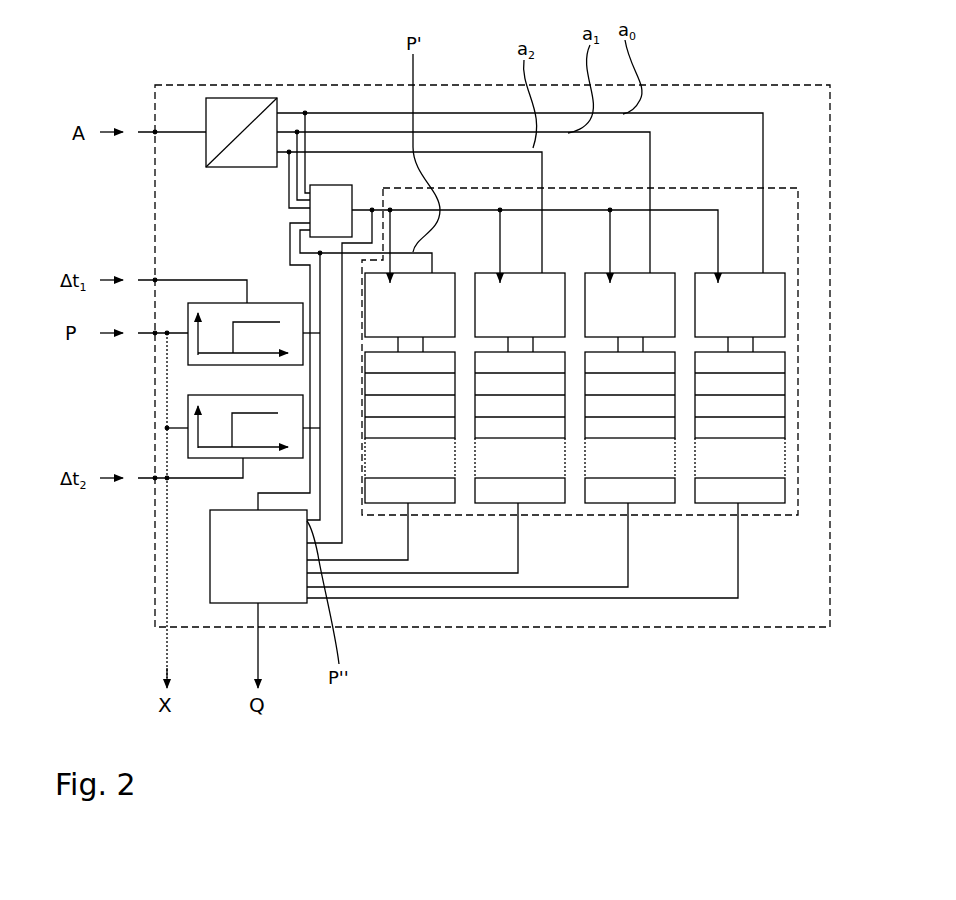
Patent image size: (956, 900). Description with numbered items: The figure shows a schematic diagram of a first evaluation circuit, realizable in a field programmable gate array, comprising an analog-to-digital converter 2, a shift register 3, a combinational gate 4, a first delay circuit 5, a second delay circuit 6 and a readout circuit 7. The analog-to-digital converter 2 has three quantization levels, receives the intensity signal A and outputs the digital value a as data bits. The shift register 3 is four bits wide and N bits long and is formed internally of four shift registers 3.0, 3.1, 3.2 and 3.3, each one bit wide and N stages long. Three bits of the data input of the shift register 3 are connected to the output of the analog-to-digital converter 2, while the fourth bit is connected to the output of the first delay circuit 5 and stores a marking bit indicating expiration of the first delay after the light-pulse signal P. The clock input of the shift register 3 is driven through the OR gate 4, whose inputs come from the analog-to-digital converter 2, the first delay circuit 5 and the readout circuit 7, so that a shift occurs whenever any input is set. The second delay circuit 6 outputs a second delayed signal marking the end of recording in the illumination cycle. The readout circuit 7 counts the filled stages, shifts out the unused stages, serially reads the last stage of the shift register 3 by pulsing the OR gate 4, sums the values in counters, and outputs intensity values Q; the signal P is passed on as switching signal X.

The analog-to-digital converter 2 is at (250, 98).
The shift register 3 is at (798, 242).
The shift register 3.0 is at (760, 503).
The shift register 3.1 is at (645, 503).
The shift register 3.2 is at (537, 503).
The shift register 3.3 is at (437, 503).
The combinational gate 4 is at (330, 185).
The first delay circuit 5 is at (188, 352).
The second delay circuit 6 is at (188, 447).
The readout circuit 7 is at (210, 552).